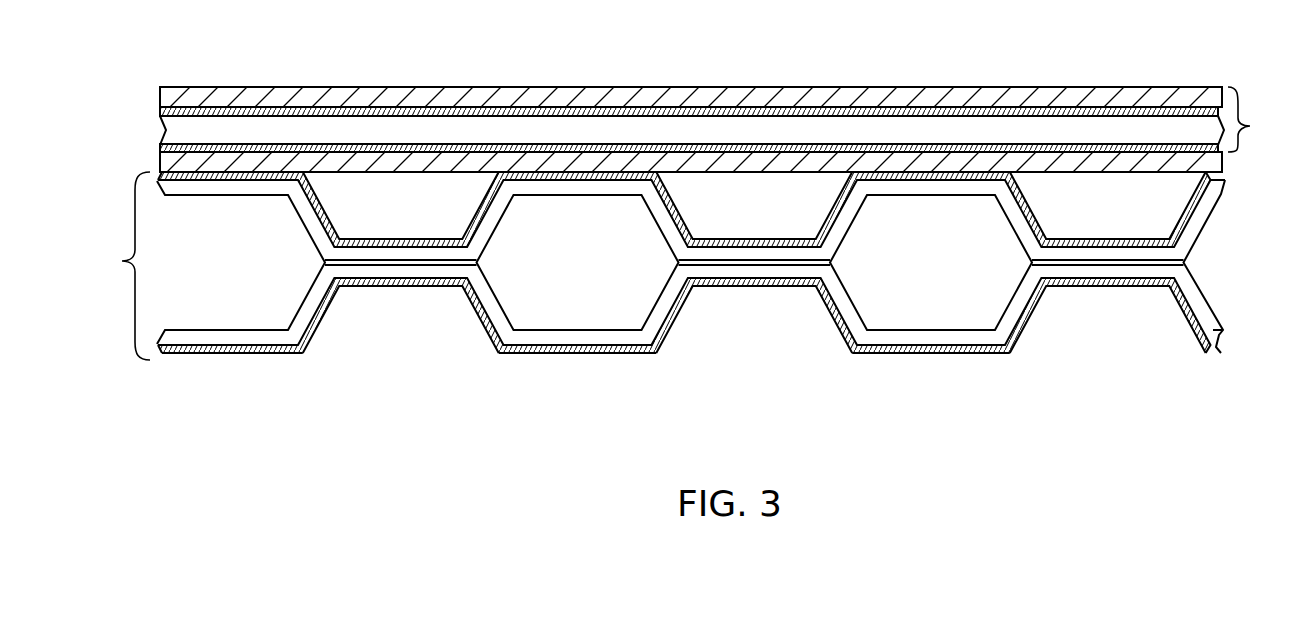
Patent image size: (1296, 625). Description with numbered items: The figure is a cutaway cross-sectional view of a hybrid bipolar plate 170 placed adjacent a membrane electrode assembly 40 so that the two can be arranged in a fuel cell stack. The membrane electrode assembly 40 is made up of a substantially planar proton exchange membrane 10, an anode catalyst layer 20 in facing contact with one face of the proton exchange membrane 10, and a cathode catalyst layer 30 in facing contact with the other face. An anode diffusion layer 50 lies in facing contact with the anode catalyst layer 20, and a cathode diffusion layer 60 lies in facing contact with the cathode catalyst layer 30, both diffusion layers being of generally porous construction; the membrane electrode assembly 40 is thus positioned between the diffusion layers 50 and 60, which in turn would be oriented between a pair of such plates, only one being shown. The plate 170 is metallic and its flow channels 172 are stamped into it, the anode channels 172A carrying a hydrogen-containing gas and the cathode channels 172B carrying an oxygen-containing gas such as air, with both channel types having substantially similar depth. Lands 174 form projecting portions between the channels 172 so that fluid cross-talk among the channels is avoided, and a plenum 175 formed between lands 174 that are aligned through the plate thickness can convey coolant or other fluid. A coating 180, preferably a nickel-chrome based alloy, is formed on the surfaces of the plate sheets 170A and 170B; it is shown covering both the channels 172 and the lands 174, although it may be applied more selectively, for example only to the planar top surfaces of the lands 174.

The proton exchange membrane 10 is at (158, 113).
The anode catalyst layer 20 is at (162, 102).
The cathode catalyst layer 30 is at (162, 146).
The membrane electrode assembly 40 is at (721, 119).
The anode diffusion layer 50 is at (183, 87).
The cathode diffusion layer 60 is at (162, 162).
The bipolar plate 170 is at (680, 230).
The plate sheet 170A is at (720, 149).
The plate sheet 170B is at (718, 343).
The flow channels 172 is at (774, 214).
The anode channels 172A is at (424, 334).
The cathode channels 172B is at (424, 214).
The lands 174 is at (220, 356).
The plenum 175 is at (245, 274).
The coating 180 is at (1213, 175).